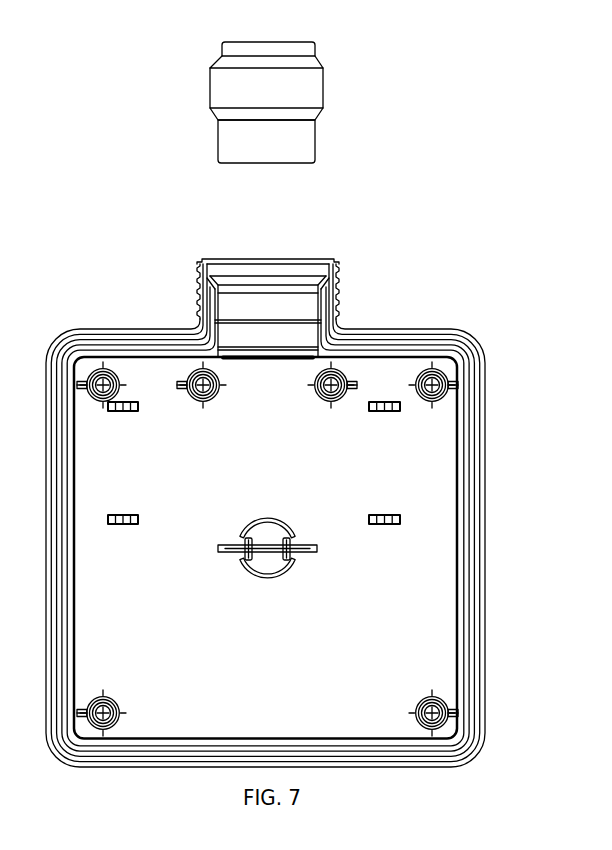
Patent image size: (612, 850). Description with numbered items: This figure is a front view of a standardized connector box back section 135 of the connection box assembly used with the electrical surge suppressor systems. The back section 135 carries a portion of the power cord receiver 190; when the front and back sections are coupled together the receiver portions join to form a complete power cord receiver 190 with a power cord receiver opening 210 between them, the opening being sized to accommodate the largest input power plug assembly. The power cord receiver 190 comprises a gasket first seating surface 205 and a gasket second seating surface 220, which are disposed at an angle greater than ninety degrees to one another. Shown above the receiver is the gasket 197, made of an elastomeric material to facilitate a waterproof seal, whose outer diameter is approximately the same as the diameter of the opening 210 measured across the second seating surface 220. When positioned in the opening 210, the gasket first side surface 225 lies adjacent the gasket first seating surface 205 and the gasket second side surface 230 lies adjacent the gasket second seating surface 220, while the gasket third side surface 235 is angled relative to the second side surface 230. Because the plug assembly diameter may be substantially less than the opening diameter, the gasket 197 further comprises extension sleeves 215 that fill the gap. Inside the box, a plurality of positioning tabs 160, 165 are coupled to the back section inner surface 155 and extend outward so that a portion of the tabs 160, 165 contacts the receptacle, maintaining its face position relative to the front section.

The back section 135 is at (443, 332).
The connector box back section inner surface 155 is at (407, 608).
The positioning tab 160 is at (258, 552).
The positioning tab 165 is at (246, 541).
The power cord receiver 190 is at (339, 282).
The gasket 197 is at (297, 92).
The gasket first seating surface 205 is at (308, 265).
The power cord receiver opening 210 is at (256, 119).
The extension sleeve 215 is at (315, 43).
The gasket second seating surface 220 is at (228, 262).
The gasket first side surface 225 is at (319, 115).
The gasket second side surface 230 is at (209, 88).
The gasket third side surface 235 is at (215, 60).